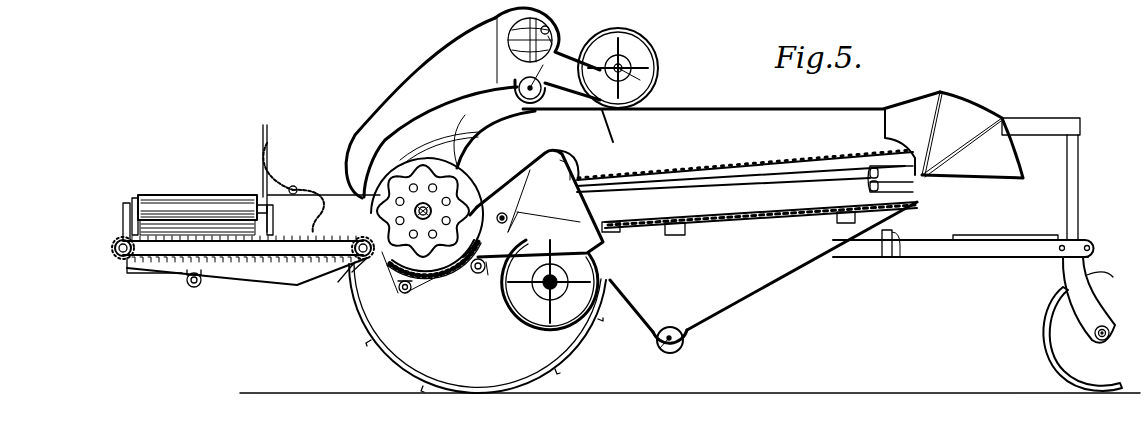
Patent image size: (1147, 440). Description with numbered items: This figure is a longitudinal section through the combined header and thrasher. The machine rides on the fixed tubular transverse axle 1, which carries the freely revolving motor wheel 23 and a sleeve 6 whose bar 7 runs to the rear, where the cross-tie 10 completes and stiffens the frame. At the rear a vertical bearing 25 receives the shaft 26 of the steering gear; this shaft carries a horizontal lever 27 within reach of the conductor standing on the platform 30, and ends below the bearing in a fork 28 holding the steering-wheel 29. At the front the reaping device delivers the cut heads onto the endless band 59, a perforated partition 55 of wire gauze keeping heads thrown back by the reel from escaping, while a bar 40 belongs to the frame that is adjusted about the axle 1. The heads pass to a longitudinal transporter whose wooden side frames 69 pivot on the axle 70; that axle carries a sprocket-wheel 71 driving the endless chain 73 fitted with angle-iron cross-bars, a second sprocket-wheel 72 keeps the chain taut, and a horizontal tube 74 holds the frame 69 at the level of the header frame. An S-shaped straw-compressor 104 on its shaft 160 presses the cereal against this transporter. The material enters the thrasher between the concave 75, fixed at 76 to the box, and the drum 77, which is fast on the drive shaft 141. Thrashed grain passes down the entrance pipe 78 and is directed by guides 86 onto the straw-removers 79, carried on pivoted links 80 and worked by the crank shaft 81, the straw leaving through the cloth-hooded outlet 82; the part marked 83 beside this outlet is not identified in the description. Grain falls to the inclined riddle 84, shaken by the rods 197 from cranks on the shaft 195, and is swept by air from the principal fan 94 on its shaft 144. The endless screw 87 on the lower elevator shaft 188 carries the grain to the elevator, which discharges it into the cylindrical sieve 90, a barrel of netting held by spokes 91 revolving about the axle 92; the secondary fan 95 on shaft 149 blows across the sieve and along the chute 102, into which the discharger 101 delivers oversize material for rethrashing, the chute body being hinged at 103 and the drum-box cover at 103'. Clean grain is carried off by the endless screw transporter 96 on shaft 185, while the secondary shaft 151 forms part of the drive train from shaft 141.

The transverse axle 1 is at (486, 276).
The sleeve 6 is at (475, 275).
The bar 7 is at (975, 258).
The cross-tie 10 is at (897, 258).
The motor wheel 23 is at (562, 379).
The vertical bearing 25 is at (1094, 248).
The steering-wheel shaft 26 is at (1079, 170).
The horizontal lever 27 is at (1040, 118).
The fork 28 is at (1090, 300).
The steering-wheel 29 is at (1065, 374).
The platform 30 is at (1008, 235).
The bar 40 is at (137, 273).
The perforated partition 55 is at (262, 131).
The endless band 59 is at (222, 195).
The side frames 69 is at (246, 275).
The axle 70 is at (350, 262).
The sprocket-wheel 71 is at (358, 241).
The sprocket-wheel 72 is at (111, 249).
The endless chain 73 is at (287, 265).
The horizontal tube 74 is at (195, 289).
The concave 75 is at (450, 270).
The concave fixing point 76 is at (398, 287).
The drum 77 is at (432, 158).
The entrance pipe 78 is at (530, 184).
The straw-removers 79 is at (735, 173).
The pivoted links 80 is at (580, 173).
The crank shaft 81 is at (913, 192).
The straw discharging outlet 82 is at (731, 133).
The discharge chute 83 is at (962, 110).
The inclined riddle 84 is at (748, 225).
The guides 86 is at (616, 137).
The endless screw 87 is at (684, 344).
The cylindrical sieve 90 is at (548, 29).
The spokes 91 is at (553, 40).
The axle 92 is at (520, 43).
The principal fan 94 is at (523, 326).
The secondary fan 95 is at (640, 58).
The endless screw transporter 96 is at (514, 92).
The discharger 101 is at (447, 53).
The outlet chute 102 is at (440, 134).
The hinge 103 is at (523, 45).
The hinge 103' is at (468, 135).
The straw-compressor 104 is at (280, 143).
The drive shaft 141 is at (379, 172).
The shaft 144 is at (556, 289).
The shaft 149 is at (656, 72).
The secondary shaft 151 is at (410, 290).
The straw-compressor shaft 160 is at (296, 185).
The shaft 185 is at (537, 80).
The lower elevator shaft 188 is at (660, 347).
The shaft 195 is at (503, 213).
The rods 197 is at (548, 216).